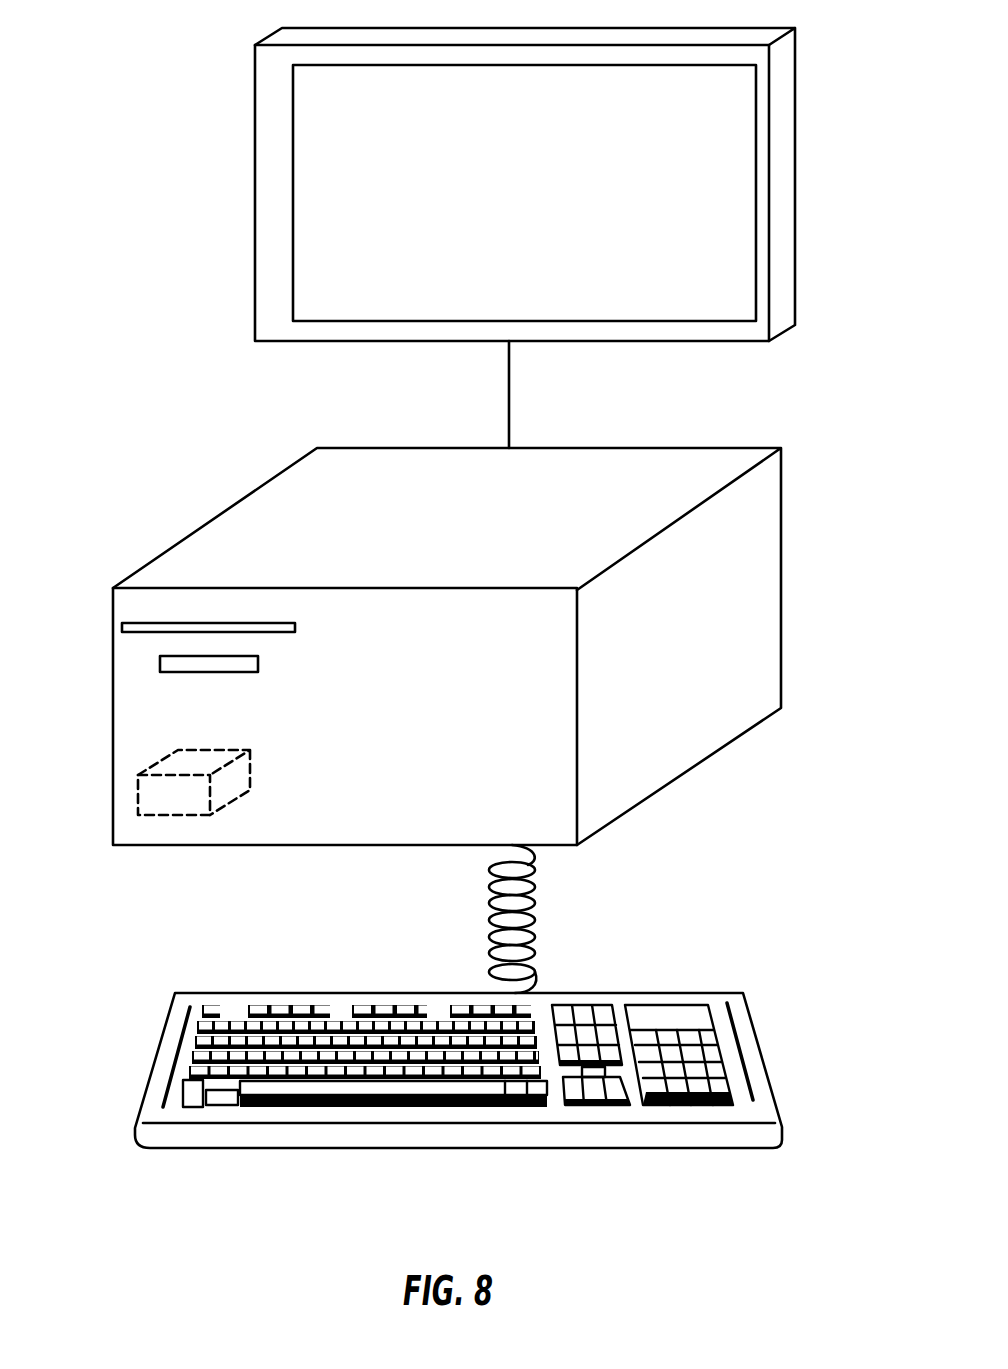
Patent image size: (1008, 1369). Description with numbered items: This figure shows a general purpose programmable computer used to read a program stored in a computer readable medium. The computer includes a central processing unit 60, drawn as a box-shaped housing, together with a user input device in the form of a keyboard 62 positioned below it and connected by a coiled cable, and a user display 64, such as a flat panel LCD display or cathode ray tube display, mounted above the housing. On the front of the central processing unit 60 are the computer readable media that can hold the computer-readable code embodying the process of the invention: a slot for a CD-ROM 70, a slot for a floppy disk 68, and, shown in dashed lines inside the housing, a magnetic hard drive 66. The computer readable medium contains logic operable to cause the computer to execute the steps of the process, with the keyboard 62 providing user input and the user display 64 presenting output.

The central processing unit 60 is at (767, 558).
The keyboard 62 is at (755, 1032).
The user display 64 is at (785, 137).
The magnetic hard drive 66 is at (250, 753).
The floppy disk 68 is at (260, 662).
The CD-ROM 70 is at (120, 627).